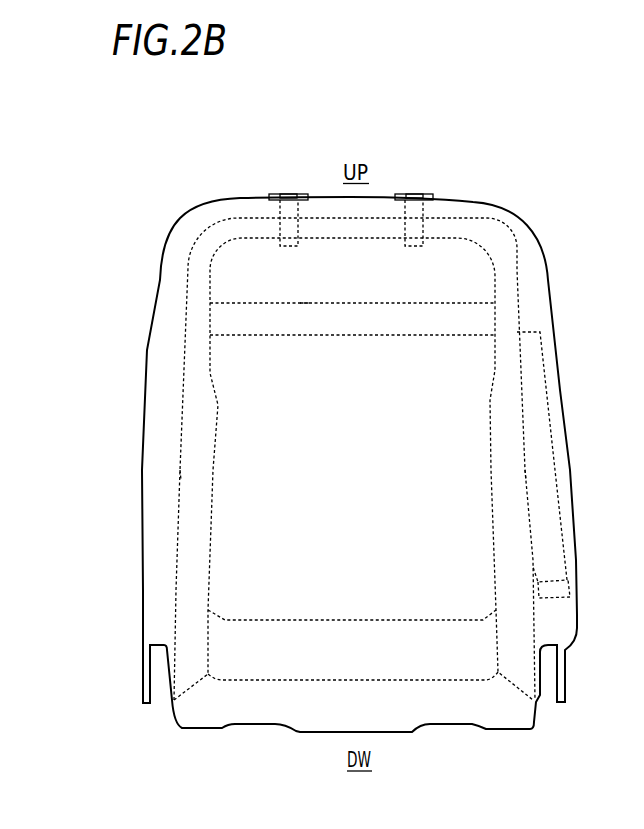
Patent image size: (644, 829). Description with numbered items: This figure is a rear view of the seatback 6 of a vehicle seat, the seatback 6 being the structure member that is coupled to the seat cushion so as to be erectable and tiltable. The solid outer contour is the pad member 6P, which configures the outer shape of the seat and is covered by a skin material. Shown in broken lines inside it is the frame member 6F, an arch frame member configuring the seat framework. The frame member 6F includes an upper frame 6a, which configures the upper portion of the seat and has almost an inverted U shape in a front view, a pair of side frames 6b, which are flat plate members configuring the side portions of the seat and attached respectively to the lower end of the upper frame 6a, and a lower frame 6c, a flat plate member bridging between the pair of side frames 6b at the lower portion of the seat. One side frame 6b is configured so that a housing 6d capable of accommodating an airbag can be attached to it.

The seatback 6 is at (357, 460).
The pad member 6P is at (237, 232).
The frame member 6F is at (512, 249).
The upper frame 6a is at (452, 228).
The side frames 6b is at (193, 435).
The lower frame 6c is at (420, 652).
The housing 6d is at (548, 503).